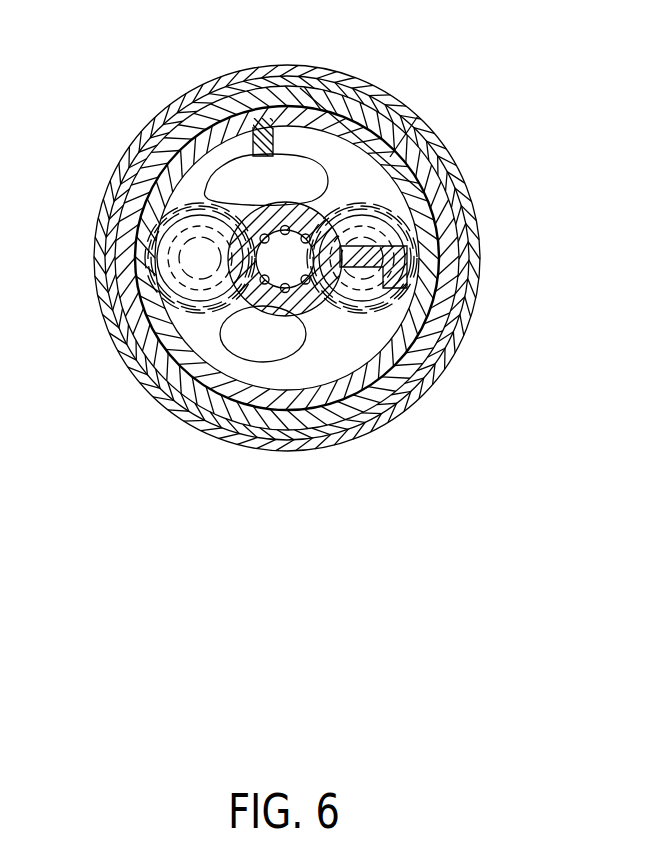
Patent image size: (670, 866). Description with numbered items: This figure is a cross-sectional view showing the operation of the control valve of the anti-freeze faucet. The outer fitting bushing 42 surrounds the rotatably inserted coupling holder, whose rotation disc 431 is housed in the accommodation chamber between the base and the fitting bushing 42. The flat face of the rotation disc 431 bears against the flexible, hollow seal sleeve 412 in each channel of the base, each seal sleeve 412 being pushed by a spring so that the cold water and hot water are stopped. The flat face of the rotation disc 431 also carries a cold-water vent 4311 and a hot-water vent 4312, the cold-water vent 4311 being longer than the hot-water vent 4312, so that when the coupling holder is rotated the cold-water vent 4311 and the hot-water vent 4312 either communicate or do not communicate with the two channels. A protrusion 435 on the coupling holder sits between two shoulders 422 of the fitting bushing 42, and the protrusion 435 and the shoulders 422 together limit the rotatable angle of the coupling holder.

The fitting bushing 42 is at (398, 120).
The rotation disc 431 is at (183, 141).
The seal sleeve 412 is at (203, 193).
The protrusion 435 is at (400, 213).
The shoulders 422 is at (322, 132).
The cold-water vent 4311 is at (242, 180).
The hot-water vent 4312 is at (258, 338).